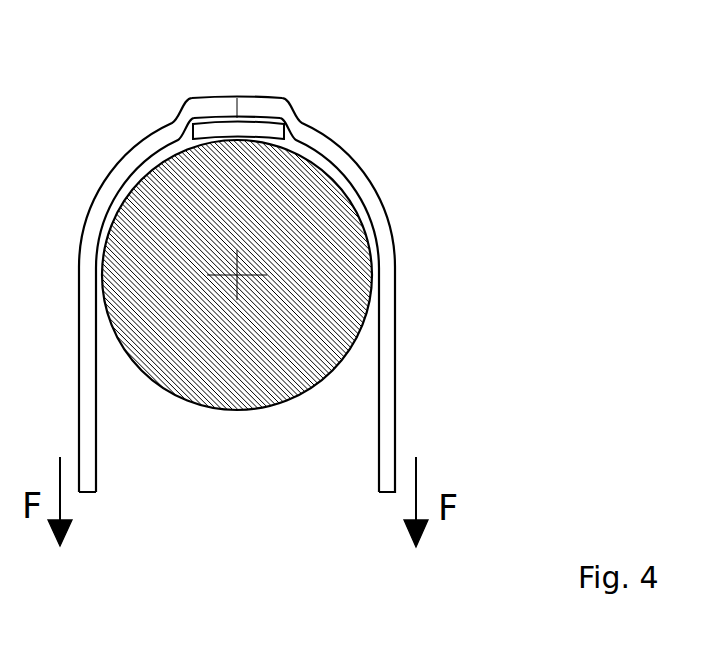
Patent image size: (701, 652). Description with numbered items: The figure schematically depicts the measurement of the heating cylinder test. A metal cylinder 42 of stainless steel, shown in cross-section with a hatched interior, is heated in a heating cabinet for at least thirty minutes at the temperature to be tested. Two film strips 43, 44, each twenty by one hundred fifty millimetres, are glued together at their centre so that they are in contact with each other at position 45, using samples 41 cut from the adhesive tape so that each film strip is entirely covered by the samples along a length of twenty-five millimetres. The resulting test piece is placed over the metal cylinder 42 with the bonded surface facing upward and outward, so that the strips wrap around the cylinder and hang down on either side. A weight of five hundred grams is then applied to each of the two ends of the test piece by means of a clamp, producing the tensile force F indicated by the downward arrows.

The sample 41 is at (267, 128).
The metal cylinder 42 is at (252, 387).
The film strip 43 is at (152, 143).
The film strip 44 is at (335, 154).
The position 45 is at (232, 86).